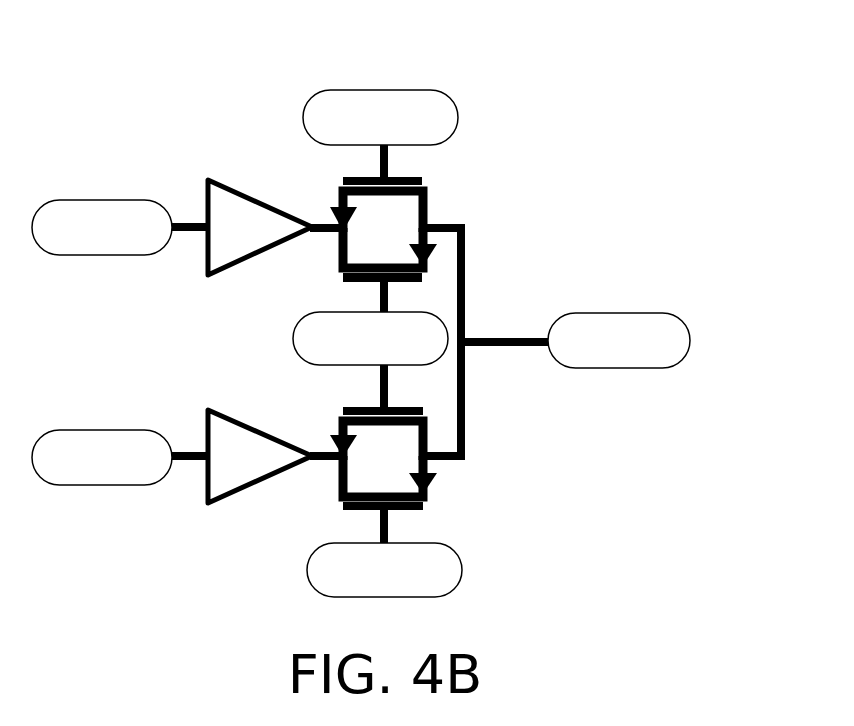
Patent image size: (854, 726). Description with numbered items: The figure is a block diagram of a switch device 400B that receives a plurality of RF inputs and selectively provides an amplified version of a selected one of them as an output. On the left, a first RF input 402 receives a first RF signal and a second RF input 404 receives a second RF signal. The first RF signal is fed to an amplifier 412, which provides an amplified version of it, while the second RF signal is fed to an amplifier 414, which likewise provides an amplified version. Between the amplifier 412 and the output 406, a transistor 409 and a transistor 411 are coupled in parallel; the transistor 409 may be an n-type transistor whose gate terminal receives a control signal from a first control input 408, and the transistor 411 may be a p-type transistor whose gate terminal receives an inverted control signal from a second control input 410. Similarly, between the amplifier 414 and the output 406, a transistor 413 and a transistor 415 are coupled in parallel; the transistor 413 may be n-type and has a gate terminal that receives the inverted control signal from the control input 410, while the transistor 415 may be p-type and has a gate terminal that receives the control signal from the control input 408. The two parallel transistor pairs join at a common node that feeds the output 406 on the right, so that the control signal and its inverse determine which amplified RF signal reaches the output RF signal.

The switch device 400B is at (494, 65).
The first RF input 402 is at (102, 227).
The second RF input 404 is at (102, 457).
The output 406 is at (619, 340).
The first control input 408 is at (382, 343).
The transistor 409 is at (425, 196).
The second control input 410 is at (370, 338).
The transistor 411 is at (338, 275).
The amplifier 412 is at (247, 190).
The transistor 413 is at (343, 415).
The amplifier 414 is at (248, 485).
The transistor 415 is at (432, 487).